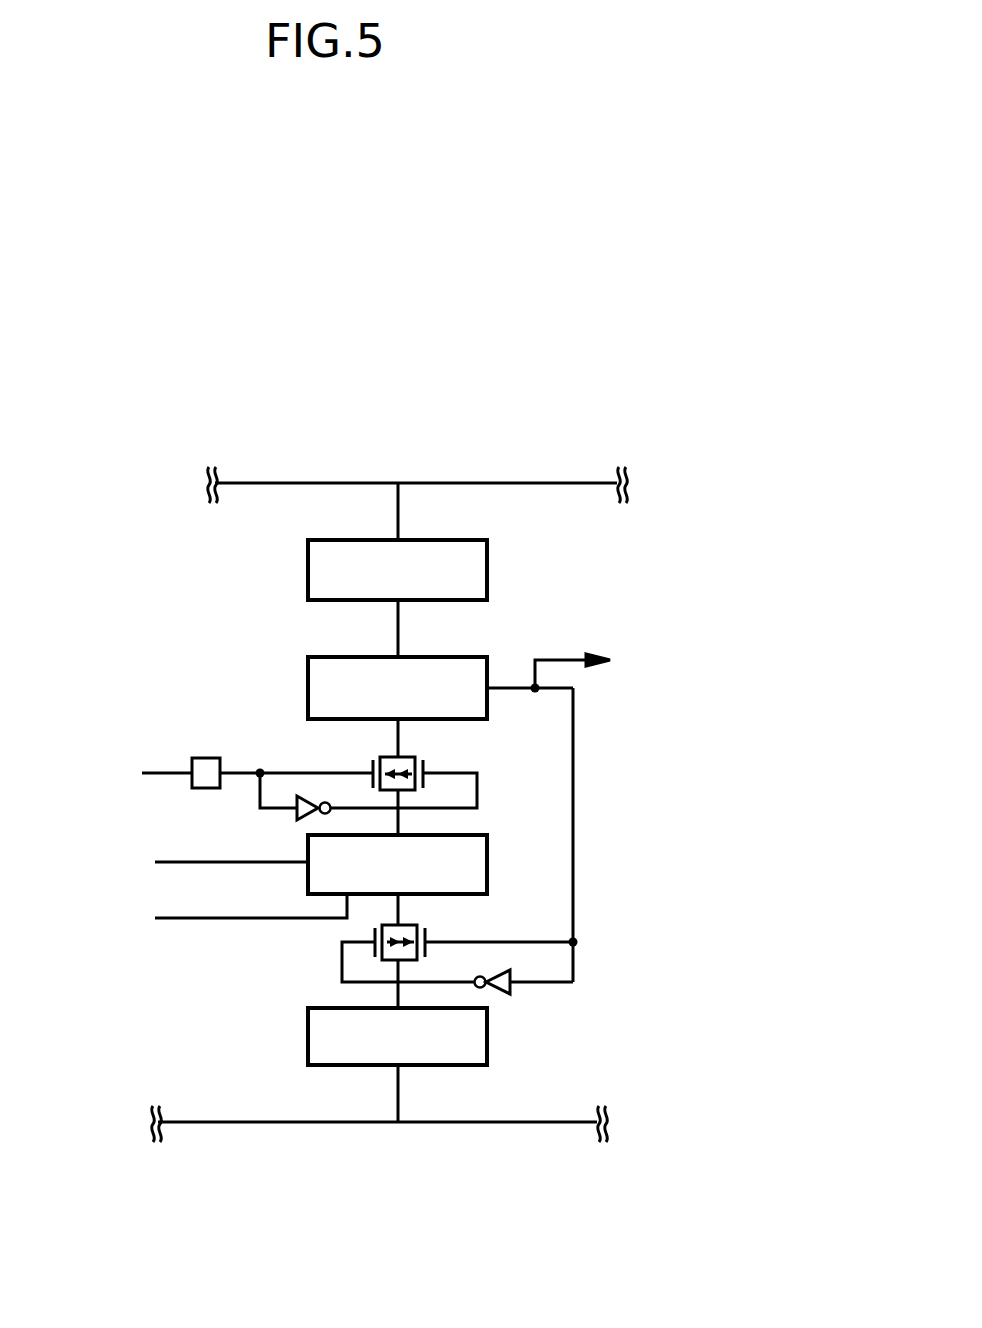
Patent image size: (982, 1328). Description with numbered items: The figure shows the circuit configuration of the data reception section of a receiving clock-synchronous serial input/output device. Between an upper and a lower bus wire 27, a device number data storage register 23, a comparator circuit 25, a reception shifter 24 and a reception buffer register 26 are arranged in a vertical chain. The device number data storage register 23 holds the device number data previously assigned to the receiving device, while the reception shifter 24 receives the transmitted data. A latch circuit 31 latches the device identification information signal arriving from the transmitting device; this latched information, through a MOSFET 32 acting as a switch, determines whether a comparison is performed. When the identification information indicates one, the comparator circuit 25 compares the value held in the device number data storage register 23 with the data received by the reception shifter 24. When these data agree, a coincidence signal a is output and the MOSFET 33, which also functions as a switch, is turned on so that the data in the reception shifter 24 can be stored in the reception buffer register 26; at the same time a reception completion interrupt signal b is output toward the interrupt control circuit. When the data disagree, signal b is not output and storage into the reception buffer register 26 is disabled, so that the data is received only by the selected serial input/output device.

The bus wire 27 is at (437, 480).
The device number data storage register 23 is at (473, 538).
The comparator circuit 25 is at (468, 656).
The reception shifter 24 is at (487, 850).
The reception buffer register 26 is at (487, 1028).
The latch circuit 31 is at (203, 755).
The MOSFET 32 is at (428, 753).
The MOSFET 33 is at (433, 927).
The coincidence signal a is at (580, 873).
The reception completion interrupt signal b is at (555, 652).